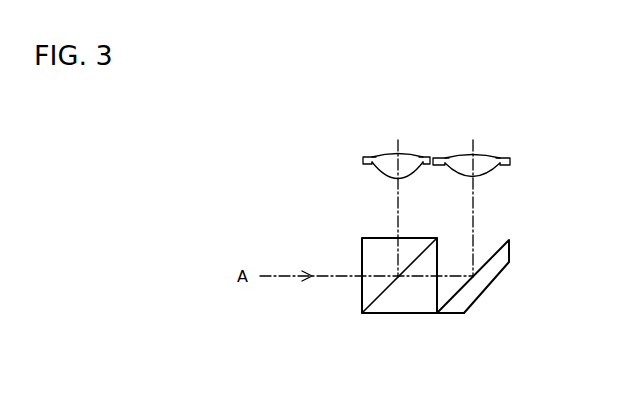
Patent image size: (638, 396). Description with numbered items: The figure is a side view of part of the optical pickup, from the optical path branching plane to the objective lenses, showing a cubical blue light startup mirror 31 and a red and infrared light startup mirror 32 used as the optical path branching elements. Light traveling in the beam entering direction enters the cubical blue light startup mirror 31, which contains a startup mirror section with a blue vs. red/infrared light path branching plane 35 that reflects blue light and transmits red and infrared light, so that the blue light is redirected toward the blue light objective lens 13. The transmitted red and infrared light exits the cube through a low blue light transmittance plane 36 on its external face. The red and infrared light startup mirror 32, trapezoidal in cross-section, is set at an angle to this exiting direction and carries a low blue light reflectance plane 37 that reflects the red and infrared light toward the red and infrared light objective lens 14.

The blue light objective lens 13 is at (385, 162).
The red and infrared light objective lens 14 is at (463, 162).
The cubical blue light startup mirror 31 is at (383, 314).
The red and infrared light startup mirror 32 is at (468, 303).
The blue vs. red/infrared light path branching plane 35 is at (362, 303).
The low blue light transmittance plane 36 is at (433, 302).
The low blue light reflectance plane 37 is at (491, 250).